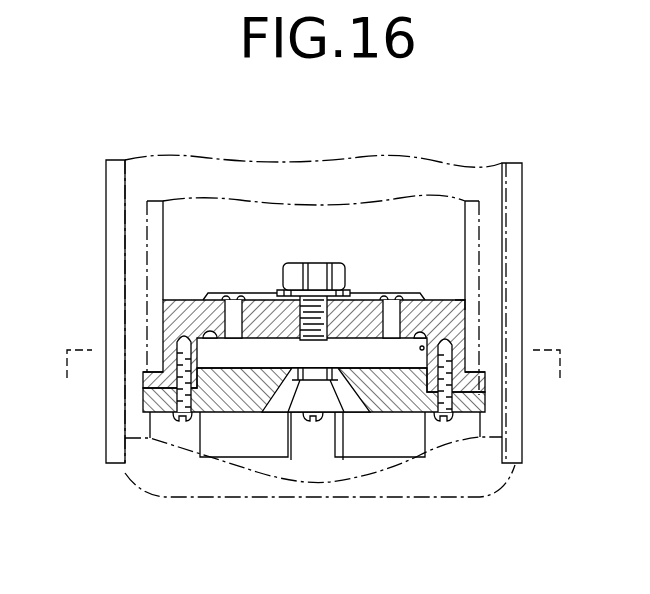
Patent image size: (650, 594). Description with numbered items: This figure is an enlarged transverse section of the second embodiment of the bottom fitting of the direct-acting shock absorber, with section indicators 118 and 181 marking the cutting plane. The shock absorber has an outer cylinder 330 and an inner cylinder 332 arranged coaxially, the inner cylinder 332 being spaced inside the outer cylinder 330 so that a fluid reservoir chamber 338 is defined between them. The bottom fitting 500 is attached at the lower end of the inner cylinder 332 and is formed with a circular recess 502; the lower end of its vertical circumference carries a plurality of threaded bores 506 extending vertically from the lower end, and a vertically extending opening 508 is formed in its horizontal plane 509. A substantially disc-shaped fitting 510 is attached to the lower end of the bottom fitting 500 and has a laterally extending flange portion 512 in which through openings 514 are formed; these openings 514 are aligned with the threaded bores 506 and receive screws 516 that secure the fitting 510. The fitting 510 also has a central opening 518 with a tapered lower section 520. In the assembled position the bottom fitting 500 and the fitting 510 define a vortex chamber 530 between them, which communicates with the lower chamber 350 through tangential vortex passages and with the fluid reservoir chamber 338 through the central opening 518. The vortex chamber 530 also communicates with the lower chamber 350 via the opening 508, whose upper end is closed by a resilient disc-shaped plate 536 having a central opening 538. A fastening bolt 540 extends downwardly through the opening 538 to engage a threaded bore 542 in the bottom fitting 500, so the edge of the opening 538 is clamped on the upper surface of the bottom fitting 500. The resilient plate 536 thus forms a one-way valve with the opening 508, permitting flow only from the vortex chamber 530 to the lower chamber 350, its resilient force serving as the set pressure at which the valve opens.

The outer cylinder 330 is at (515, 190).
The inner cylinder 332 is at (473, 212).
The fluid reservoir chamber 338 is at (133, 248).
The lower chamber 350 is at (275, 210).
The bottom fitting 500 is at (163, 305).
The circular recess 502 is at (423, 348).
The threaded bore 506 is at (175, 388).
The vertically extending opening 508 is at (233, 322).
The horizontal plane 509 is at (452, 303).
The disc-shaped fitting 510 is at (397, 417).
The flange portion 512 is at (455, 400).
The through opening 514 is at (172, 415).
The screw 516 is at (175, 417).
The central opening 518 is at (298, 420).
The tapered lower section 520 is at (343, 415).
The vortex chamber 530 is at (237, 355).
The resilient disc-shaped plate 536 is at (253, 296).
The central opening 538 is at (290, 290).
The fastening bolt 540 is at (325, 265).
The threaded bore 542 is at (309, 262).
The section line 18 indicator 118 is at (564, 364).
The section line 18 indicator 181 is at (63, 366).